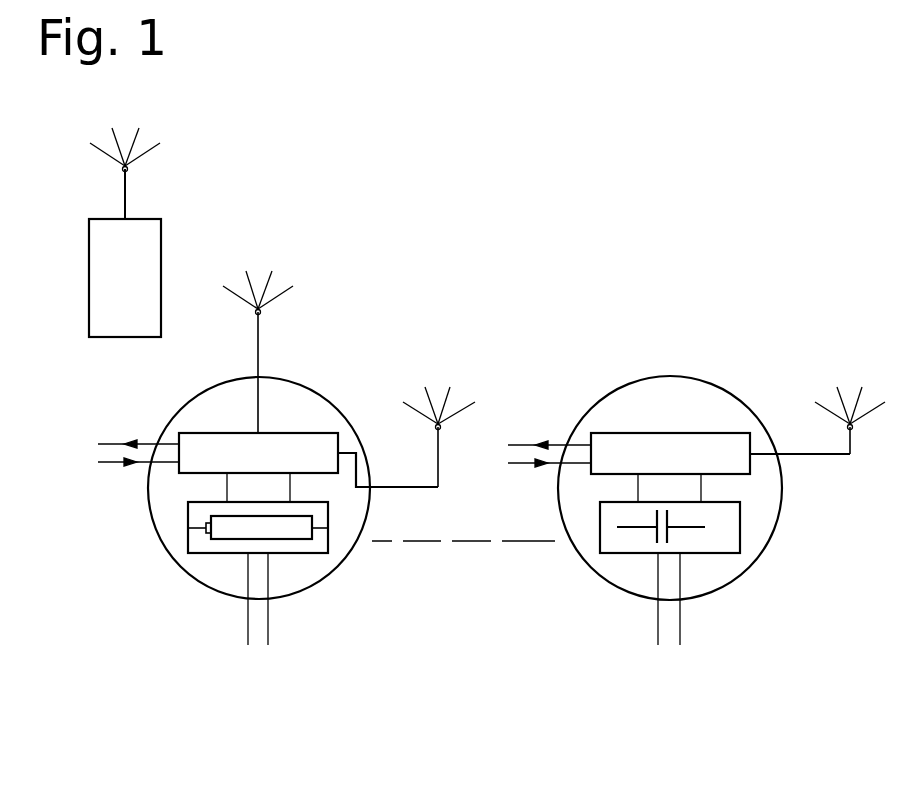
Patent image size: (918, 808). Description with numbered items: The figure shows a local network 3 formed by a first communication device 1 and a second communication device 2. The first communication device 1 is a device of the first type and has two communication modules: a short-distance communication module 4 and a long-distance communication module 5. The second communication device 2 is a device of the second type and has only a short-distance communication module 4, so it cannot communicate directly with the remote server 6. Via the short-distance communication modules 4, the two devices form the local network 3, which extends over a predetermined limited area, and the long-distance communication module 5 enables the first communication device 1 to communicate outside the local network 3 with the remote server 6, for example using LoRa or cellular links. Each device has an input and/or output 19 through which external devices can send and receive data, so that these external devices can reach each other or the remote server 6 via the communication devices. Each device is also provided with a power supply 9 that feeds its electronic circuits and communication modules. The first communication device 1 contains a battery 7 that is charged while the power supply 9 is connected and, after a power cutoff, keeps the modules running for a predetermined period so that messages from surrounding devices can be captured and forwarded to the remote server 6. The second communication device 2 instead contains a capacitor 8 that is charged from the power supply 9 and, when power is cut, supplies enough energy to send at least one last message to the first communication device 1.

The first communication device 1 is at (326, 398).
The second communication device 2 is at (715, 386).
The local network 3 is at (431, 657).
The short-distance communication module 4 is at (400, 487).
The long-distance communication module 5 is at (258, 351).
The remote server 6 is at (122, 243).
The battery 7 is at (215, 553).
The capacitor 8 is at (622, 553).
The power supply 9 is at (268, 612).
The input and/or output 19 is at (138, 421).